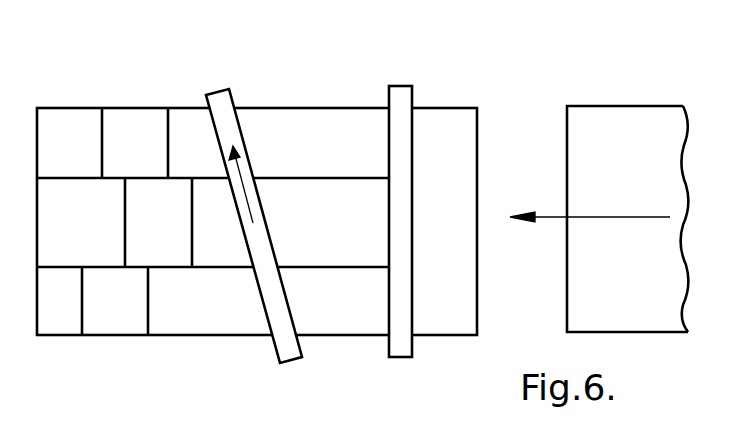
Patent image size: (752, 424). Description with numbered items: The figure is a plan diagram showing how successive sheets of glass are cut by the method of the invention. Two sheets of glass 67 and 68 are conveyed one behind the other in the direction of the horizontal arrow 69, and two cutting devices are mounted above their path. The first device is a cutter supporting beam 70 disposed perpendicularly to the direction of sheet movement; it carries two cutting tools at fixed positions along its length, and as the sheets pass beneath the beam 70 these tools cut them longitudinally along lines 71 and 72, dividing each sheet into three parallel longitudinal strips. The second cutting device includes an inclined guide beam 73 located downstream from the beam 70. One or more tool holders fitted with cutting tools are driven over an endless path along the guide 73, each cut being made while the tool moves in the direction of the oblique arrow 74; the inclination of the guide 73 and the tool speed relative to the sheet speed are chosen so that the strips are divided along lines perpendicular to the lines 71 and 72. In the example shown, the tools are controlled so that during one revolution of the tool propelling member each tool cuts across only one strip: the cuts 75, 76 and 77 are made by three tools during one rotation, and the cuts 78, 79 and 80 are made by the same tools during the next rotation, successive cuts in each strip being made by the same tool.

The sheet of glass 67 is at (447, 107).
The sheet of glass 68 is at (594, 105).
The horizontal arrow 69 is at (548, 217).
The cutter supporting beam 70 is at (415, 345).
The longitudinal cutting line 71 is at (307, 177).
The longitudinal cutting line 72 is at (347, 267).
The guide beam 73 is at (275, 350).
The oblique arrow 74 is at (248, 202).
The cut 75 is at (81, 285).
The cut 76 is at (100, 136).
The cut 77 is at (127, 221).
The cut 78 is at (149, 291).
The cut 79 is at (167, 131).
The cut 80 is at (192, 218).